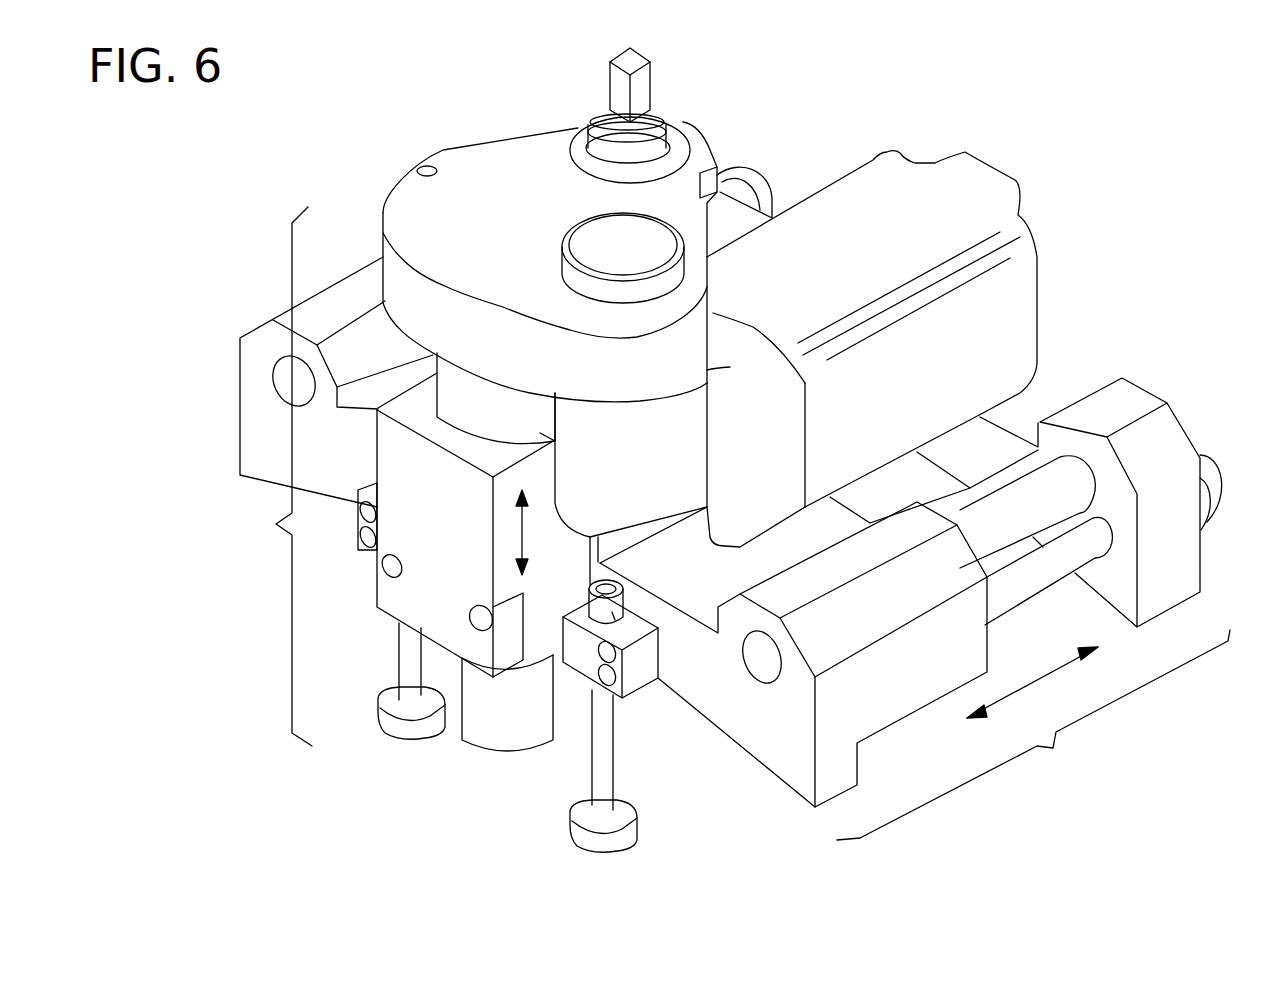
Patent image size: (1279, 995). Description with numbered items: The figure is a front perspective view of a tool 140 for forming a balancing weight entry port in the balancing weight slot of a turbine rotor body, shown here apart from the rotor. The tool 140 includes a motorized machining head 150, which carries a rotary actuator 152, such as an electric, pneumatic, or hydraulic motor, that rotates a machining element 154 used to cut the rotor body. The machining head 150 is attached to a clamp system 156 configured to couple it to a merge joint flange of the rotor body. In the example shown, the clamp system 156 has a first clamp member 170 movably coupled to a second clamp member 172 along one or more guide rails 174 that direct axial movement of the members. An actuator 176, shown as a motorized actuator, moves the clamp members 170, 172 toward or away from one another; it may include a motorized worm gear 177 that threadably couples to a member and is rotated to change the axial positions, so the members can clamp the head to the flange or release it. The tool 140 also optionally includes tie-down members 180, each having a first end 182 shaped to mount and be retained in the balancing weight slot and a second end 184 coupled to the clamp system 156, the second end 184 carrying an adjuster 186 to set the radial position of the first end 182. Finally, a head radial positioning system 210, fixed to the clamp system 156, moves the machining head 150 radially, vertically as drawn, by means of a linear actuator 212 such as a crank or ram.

The tool 140 is at (577, 215).
The motorized machining head 150 is at (265, 476).
The rotary actuator 152 is at (497, 175).
The machining element 154 is at (492, 737).
The clamp system 156 is at (1033, 735).
The first clamp member 170 is at (1150, 443).
The second clamp member 172 is at (772, 743).
The guide rails 174 is at (265, 373).
The actuator 176 is at (875, 203).
The motorized worm gear 177 is at (993, 522).
The tie-down member 180 is at (408, 655).
The first end 182 is at (390, 700).
The second end 184 is at (608, 614).
The adjuster 186 is at (600, 687).
The head radial positioning system 210 is at (437, 514).
The linear actuator 212 is at (376, 406).